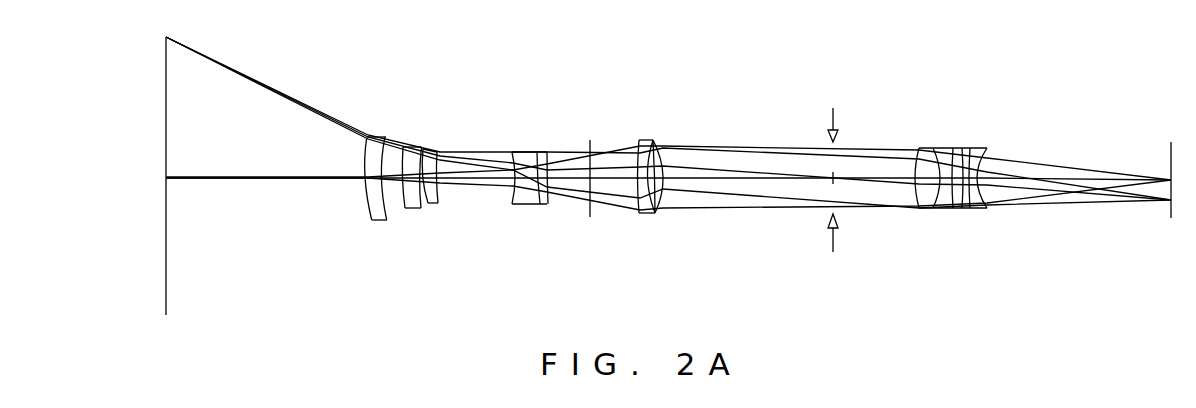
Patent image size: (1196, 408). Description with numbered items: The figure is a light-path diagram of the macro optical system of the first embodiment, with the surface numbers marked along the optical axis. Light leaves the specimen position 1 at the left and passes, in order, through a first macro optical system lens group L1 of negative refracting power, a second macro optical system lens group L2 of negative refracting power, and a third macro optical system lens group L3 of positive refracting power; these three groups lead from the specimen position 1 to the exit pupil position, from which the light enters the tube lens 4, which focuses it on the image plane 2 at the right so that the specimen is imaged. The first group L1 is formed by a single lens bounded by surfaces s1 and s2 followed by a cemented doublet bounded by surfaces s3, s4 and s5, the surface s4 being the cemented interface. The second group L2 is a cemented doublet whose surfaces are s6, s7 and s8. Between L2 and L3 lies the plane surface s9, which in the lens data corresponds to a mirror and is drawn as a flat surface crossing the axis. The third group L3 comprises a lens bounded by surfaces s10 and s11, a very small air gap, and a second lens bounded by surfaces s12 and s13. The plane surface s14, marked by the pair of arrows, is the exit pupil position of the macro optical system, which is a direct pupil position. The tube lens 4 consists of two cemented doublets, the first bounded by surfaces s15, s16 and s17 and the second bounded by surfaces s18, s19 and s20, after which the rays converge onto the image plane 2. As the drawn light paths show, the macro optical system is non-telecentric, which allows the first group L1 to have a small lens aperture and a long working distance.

The specimen position 1 is at (166, 290).
The image plane 2 is at (1172, 220).
The tube lens 4 is at (1003, 218).
The first macro optical system lens group L1 is at (445, 222).
The second macro optical system lens group L2 is at (527, 208).
The third macro optical system lens group L3 is at (647, 218).
The surface number 1 s1 is at (365, 136).
The surface number 2 s2 is at (387, 134).
The surface number 3 s3 is at (408, 146).
The surface number 4 s4 is at (426, 148).
The surface number 5 s5 is at (440, 151).
The surface number 6 s6 is at (512, 151).
The surface number 7 s7 is at (537, 151).
The surface number 8 s8 is at (548, 151).
The surface number 9 s9 is at (592, 139).
The surface number 10 s10 is at (640, 140).
The surface number 11 s11 is at (655, 140).
The surface number 12 s12 is at (649, 157).
The surface number 13 s13 is at (667, 158).
The surface number 14 s14 is at (832, 107).
The surface number 15 s15 is at (919, 154).
The surface number 16 s16 is at (935, 150).
The surface number 17 s17 is at (952, 150).
The surface number 18 s18 is at (961, 150).
The surface number 19 s19 is at (972, 150).
The surface number 20 s20 is at (990, 152).